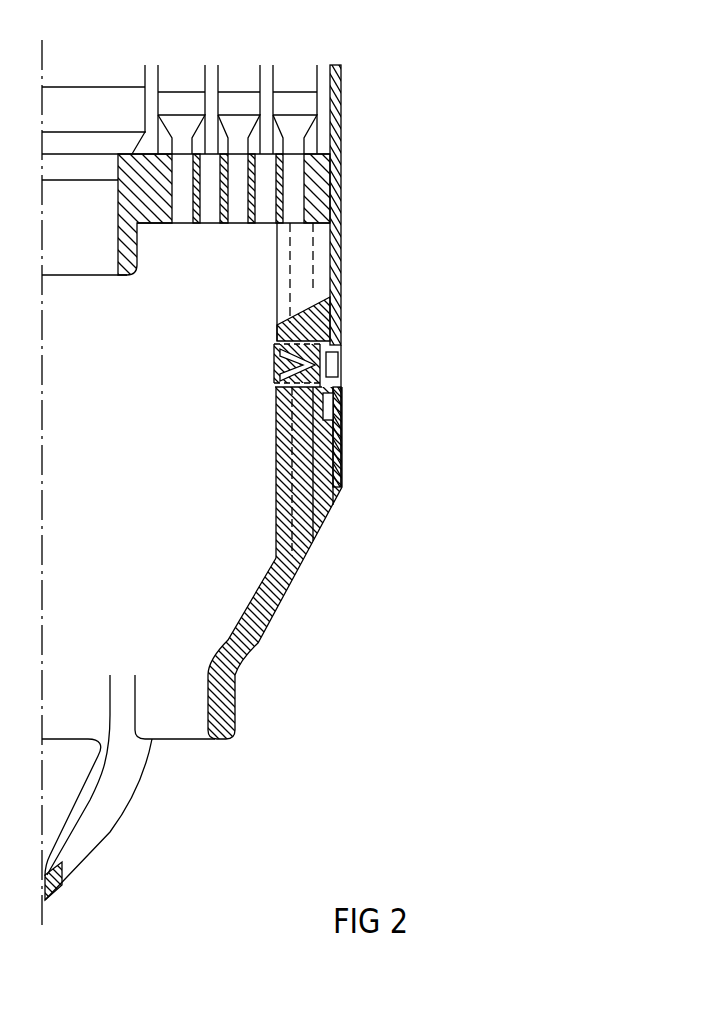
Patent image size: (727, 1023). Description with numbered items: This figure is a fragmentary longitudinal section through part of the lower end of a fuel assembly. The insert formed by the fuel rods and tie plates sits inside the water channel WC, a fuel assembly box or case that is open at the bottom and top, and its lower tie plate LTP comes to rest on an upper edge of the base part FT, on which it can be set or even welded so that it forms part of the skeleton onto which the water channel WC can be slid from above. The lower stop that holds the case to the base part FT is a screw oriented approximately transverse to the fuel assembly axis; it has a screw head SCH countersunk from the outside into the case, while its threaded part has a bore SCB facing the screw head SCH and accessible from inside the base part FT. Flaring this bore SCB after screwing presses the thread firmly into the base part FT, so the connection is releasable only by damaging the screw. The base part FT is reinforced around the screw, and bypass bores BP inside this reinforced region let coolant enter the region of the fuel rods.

The lower tie plate LTP is at (318, 186).
The water channel WC is at (340, 258).
The bore SCB is at (283, 366).
The screw head SCH is at (334, 390).
The bypass bores BP is at (326, 518).
The base part FT is at (255, 645).